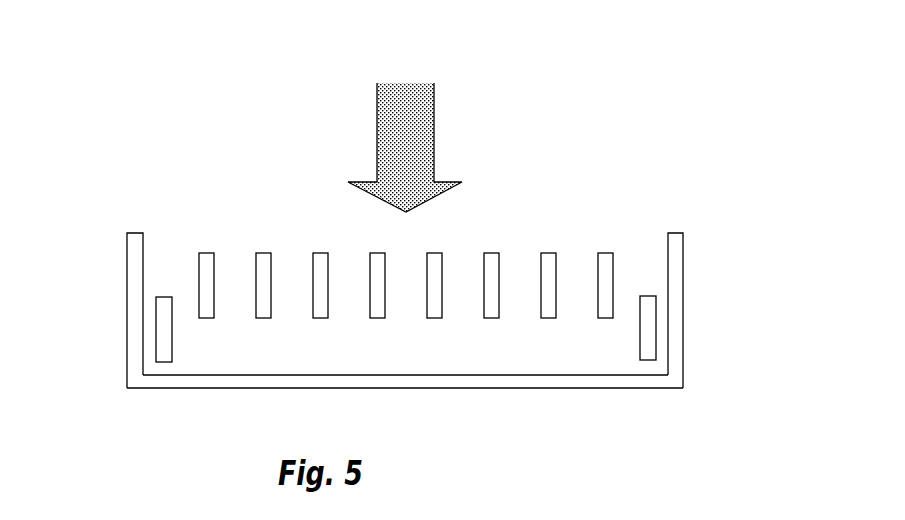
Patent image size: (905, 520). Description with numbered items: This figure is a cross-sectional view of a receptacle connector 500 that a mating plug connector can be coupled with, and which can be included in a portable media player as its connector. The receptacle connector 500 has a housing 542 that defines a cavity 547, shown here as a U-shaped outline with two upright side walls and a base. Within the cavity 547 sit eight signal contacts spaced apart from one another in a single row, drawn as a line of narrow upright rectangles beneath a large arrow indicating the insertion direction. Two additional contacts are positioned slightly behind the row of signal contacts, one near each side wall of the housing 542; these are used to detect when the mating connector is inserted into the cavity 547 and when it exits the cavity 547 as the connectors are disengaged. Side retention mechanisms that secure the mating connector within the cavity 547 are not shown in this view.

The receptacle connector 500 is at (652, 190).
The housing 542 is at (127, 318).
The cavity 547 is at (372, 347).